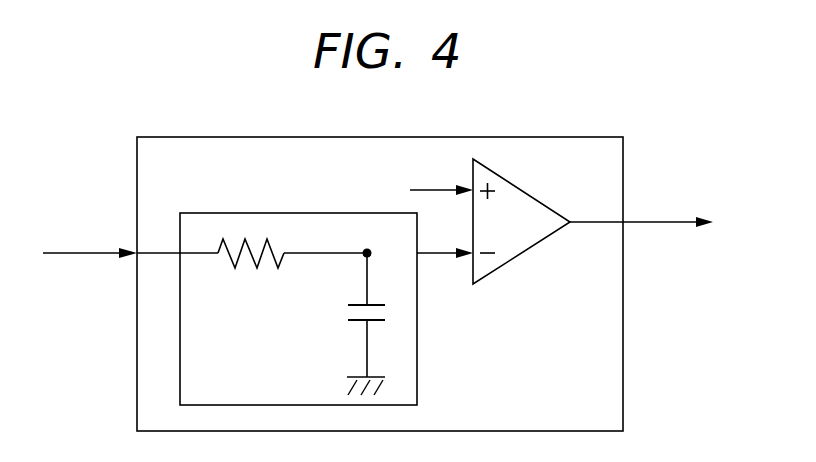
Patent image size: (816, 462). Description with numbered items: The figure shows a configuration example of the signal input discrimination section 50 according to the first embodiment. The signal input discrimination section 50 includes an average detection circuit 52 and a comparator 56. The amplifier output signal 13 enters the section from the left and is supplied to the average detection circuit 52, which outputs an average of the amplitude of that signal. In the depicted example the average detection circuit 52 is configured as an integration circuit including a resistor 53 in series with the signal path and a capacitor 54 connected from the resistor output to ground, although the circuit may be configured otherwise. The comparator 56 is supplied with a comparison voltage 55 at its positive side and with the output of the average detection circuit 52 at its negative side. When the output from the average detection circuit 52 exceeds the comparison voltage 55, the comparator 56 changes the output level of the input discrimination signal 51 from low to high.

The amplifier output signal 13 is at (75, 252).
The signal input discrimination section 50 is at (558, 137).
The input discrimination signal 51 is at (673, 219).
The average detection circuit 52 is at (215, 213).
The resistor 53 is at (247, 264).
The capacitor 54 is at (361, 321).
The comparison voltage 55 is at (377, 180).
The comparator 56 is at (528, 193).